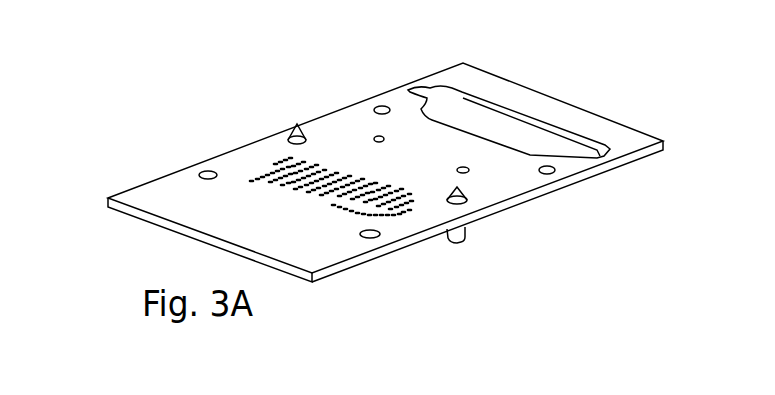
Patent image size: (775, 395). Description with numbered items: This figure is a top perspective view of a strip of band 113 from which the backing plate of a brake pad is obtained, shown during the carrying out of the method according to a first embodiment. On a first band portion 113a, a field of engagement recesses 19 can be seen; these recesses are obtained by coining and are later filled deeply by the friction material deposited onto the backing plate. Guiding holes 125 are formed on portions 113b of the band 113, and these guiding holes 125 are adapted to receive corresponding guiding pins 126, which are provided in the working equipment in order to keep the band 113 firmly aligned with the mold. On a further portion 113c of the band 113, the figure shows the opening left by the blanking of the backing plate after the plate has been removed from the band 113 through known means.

The band 113 is at (635, 162).
The first band portion 113a is at (268, 156).
The band portions 113b is at (205, 166).
The band portion 113c is at (464, 118).
The guiding holes 125 is at (550, 169).
The guiding pins 126 is at (305, 135).
The engagement recesses 19 is at (352, 211).